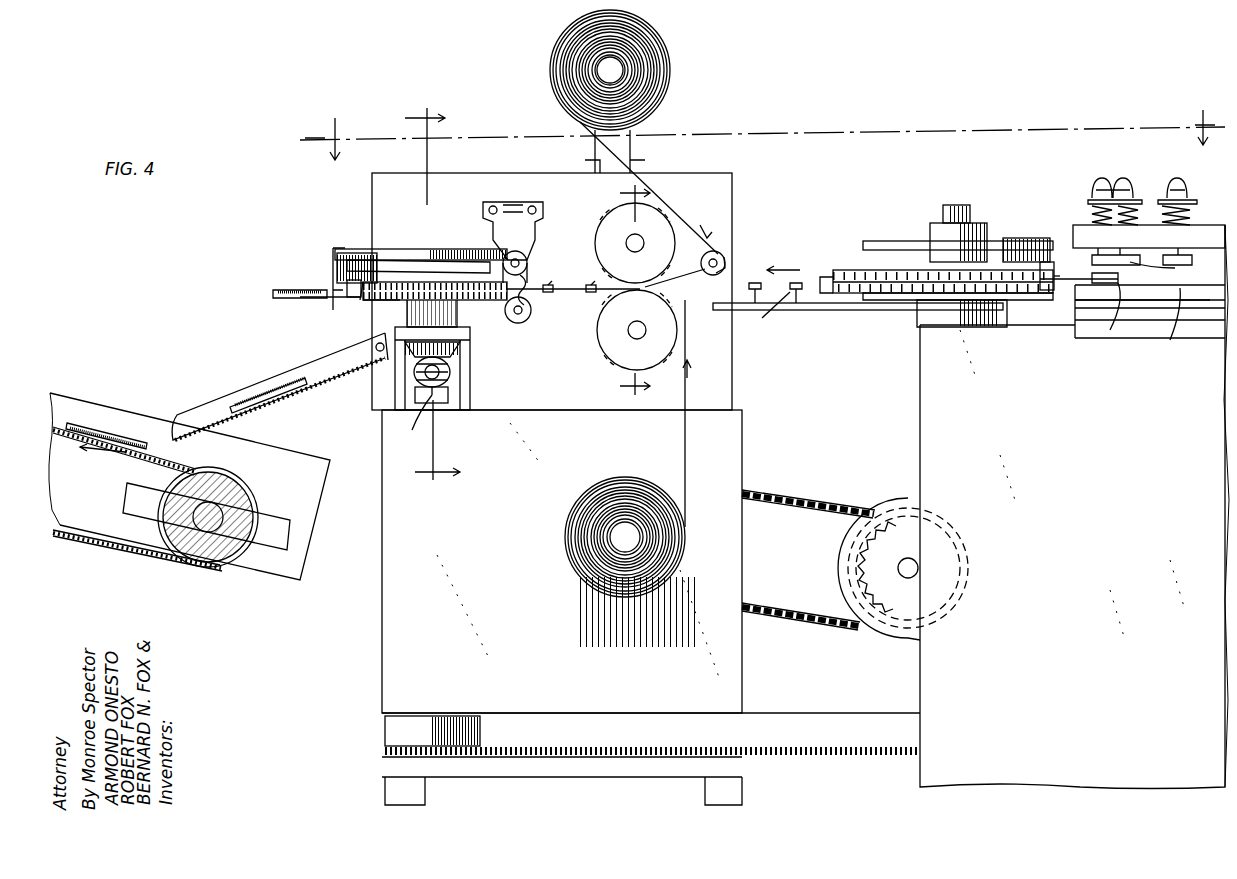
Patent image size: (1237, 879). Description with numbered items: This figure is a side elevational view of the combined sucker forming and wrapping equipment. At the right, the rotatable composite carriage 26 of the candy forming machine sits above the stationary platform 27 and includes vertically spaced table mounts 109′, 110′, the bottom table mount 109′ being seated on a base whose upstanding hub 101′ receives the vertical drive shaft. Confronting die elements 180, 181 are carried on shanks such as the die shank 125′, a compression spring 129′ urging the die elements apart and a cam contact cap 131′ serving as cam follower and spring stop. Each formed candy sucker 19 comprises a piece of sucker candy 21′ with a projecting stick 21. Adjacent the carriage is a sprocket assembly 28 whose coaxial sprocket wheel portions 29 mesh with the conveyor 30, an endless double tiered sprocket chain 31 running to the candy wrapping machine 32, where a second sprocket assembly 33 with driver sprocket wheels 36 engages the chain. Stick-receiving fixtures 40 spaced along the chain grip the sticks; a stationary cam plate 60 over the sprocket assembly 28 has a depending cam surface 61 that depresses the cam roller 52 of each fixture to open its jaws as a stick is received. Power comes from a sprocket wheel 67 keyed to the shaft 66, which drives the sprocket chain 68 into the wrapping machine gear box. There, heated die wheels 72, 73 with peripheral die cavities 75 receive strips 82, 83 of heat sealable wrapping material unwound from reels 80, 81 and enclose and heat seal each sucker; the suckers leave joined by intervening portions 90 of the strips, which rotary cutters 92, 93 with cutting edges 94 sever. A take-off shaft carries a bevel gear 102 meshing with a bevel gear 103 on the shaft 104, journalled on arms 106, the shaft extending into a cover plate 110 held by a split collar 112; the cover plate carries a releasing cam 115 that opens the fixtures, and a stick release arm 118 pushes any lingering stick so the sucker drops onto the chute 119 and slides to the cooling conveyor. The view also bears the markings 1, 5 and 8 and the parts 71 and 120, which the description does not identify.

The section line 1- 1 is at (762, 135).
The section line 5 is at (432, 295).
The section line 8 is at (629, 296).
The candy sucker 19 is at (268, 301).
The stick 21 is at (720, 275).
The piece of sucker candy 21′ is at (1115, 285).
The composite carriage 26 is at (1075, 222).
The stationary platform 27 is at (920, 360).
The sprocket assembly 28 is at (922, 255).
The sprocket wheel portions 29 is at (875, 272).
The conveyor 30 is at (845, 296).
The double tiered sprocket chain 31 is at (832, 285).
The candy wrapping machine 32 is at (560, 170).
The sprocket assembly 33 is at (479, 312).
The driver sprocket wheels 36 is at (400, 300).
The stick-receiving fixture 40 is at (1058, 262).
The cam roller 52 is at (346, 283).
The cam plate 60 is at (888, 242).
The cam surface 61 is at (995, 262).
The shaft 66 is at (918, 566).
The sprocket wheel 67 is at (897, 530).
The sprocket chain 68 is at (805, 498).
The housing 71 is at (738, 196).
The die wheel 72 is at (598, 233).
The die wheel 73 is at (598, 330).
The die cavities 75 is at (610, 215).
The reel 80 is at (665, 52).
The reel 81 is at (572, 566).
The strip of wrapping material 82 is at (720, 195).
The strip of wrapping material 83 is at (682, 442).
The intervening portions 90 is at (578, 275).
The rotary cutter 92 is at (543, 258).
The rotary cutter 93 is at (528, 318).
The cutting edge 94 is at (528, 280).
The upstanding hub 101′ is at (1075, 312).
The bevel gear 102 is at (408, 413).
The bevel gear 103 is at (462, 353).
The shaft 104 is at (452, 375).
The arms 106 is at (470, 400).
The bottom table mount 109′ is at (1191, 326).
The cover plate 110 is at (410, 250).
The table mount 110′ is at (1149, 236).
The split collar 112 is at (472, 235).
The releasing cam 115 is at (336, 265).
The stick release arm 118 is at (330, 252).
The chute 119 is at (322, 375).
The conveyor drum 120 is at (230, 472).
The die shank 125′ is at (1120, 230).
The compression spring 129′ is at (1190, 198).
The cam contact cap 131′ is at (1125, 178).
The die element 180 is at (1130, 290).
The die element 181 is at (1180, 272).